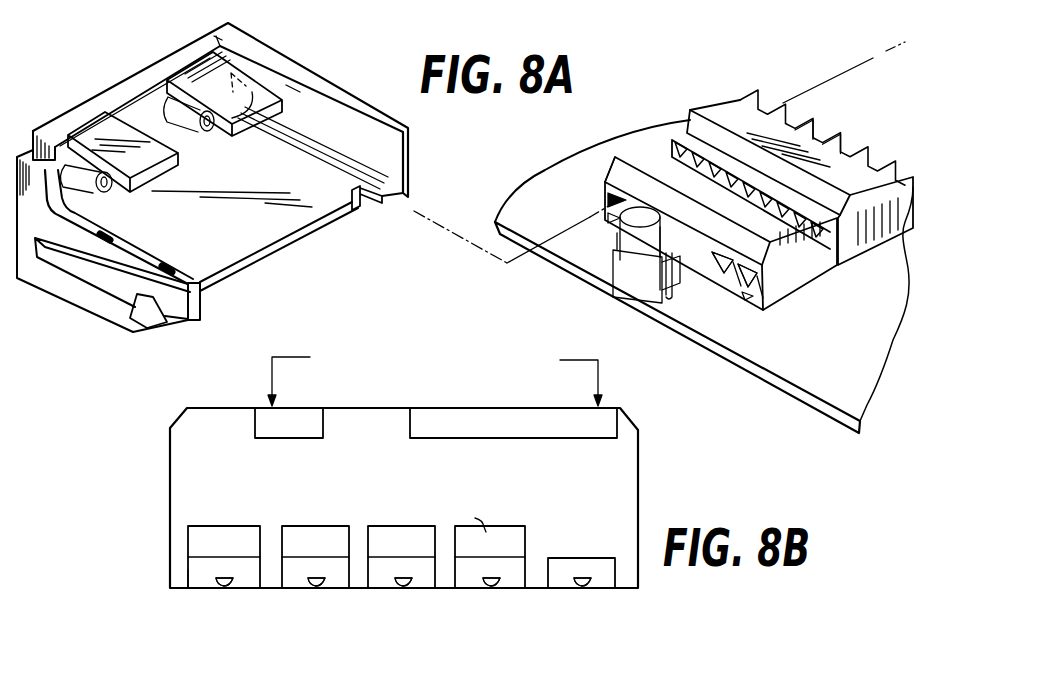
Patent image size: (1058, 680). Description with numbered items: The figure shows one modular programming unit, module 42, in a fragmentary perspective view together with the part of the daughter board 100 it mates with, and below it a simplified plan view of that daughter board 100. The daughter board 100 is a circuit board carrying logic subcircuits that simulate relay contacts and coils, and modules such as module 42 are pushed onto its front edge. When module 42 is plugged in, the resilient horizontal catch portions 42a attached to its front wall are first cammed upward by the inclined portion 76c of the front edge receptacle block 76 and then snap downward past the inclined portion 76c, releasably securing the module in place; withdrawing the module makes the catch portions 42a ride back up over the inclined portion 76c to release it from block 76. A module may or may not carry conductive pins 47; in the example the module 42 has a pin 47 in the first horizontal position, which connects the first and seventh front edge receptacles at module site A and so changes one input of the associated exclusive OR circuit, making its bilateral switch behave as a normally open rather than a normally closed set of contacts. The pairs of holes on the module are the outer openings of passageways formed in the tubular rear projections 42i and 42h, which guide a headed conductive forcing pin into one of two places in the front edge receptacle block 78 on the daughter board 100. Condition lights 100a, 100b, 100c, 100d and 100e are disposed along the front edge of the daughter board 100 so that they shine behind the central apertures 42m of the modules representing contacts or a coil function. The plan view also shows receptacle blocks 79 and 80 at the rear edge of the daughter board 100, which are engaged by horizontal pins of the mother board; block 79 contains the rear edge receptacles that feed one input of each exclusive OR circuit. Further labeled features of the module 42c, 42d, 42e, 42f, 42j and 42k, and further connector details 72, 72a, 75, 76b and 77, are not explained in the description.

In FIG. 8A, the modular programming unit 42 is at (143, 68).
In FIG. 8A, the resilient horizontal catch portions 42a is at (283, 101).
In FIG. 8A, the frame corner wall 42c is at (199, 46).
In FIG. 8A, the front face of base 42d is at (97, 305).
In FIG. 8A, the side wall 42e is at (293, 88).
In FIG. 8A, the mounting bracket 42f is at (130, 317).
In FIG. 8A, the tubular rear projection 42h is at (110, 194).
In FIG. 8A, the tubular rear projection 42i is at (153, 192).
In FIG. 8A, the carriage eyelet 42j is at (205, 134).
In FIG. 8A, the hidden roller 42k is at (231, 72).
In FIG. 8A, the central aperture 42m is at (127, 112).
In FIG. 8A, the conductive pin 47 is at (366, 204).
In FIG. 8A, the header connector 72 is at (744, 110).
In FIG. 8B, the header connector 72 is at (217, 528).
In FIG. 8A, the polarizing teeth 72a is at (823, 178).
In FIG. 8B, the connectors B and C 75 is at (462, 522).
In FIG. 8A, the receptacle block 76 is at (805, 277).
In FIG. 8B, the receptacle block 76 is at (193, 575).
In FIG. 8A, the receptacle cavities 76b is at (745, 282).
In FIG. 8A, the inclined portion 76c is at (622, 158).
In FIG. 8B, the connector D 77 is at (572, 545).
In FIG. 8B, the front edge receptacle block 78 is at (612, 558).
In FIG. 8B, the receptacle block 79 is at (368, 469).
In FIG. 8B, the receptacle block 80 is at (537, 430).
In FIG. 8A, the daughter board 100 is at (866, 404).
In FIG. 8B, the daughter board 100 is at (700, 485).
In FIG. 8A, the condition light 100a is at (640, 248).
In FIG. 8B, the condition light 100a is at (230, 585).
In FIG. 8B, the condition light 100b is at (325, 587).
In FIG. 8B, the condition light 100c is at (412, 587).
In FIG. 8B, the condition light 100d is at (497, 587).
In FIG. 8B, the condition light 100e is at (607, 588).